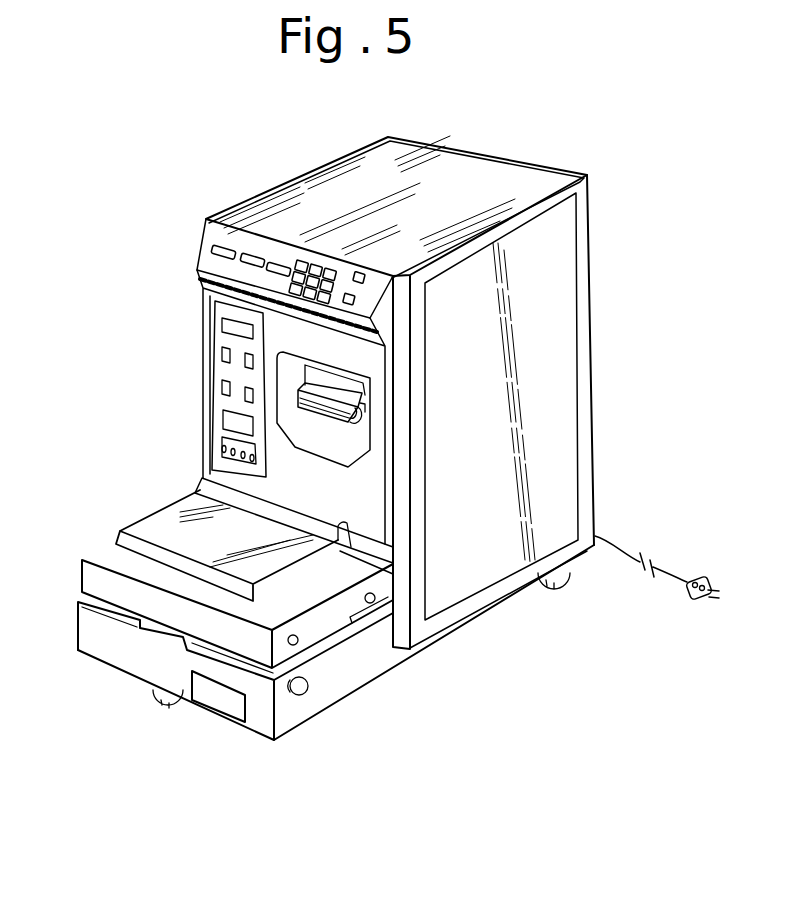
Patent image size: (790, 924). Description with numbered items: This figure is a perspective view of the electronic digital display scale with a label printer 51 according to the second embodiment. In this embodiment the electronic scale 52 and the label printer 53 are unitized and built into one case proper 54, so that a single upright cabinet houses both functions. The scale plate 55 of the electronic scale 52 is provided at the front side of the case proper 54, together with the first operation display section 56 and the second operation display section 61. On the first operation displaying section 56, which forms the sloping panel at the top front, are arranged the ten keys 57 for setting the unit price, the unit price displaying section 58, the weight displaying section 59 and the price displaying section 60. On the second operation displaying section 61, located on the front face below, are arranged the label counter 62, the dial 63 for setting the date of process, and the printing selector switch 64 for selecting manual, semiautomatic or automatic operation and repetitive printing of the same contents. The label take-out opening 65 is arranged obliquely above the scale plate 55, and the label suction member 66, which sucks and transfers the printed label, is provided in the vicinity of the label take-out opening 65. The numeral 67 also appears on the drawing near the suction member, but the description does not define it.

The electronic digital display scale with a label printer 51 is at (516, 157).
The electronic scale 52 is at (343, 677).
The label printer 53 is at (562, 477).
The case proper 54 is at (551, 301).
The scale plate 55 is at (140, 532).
The No. 1 operation display section 56 is at (253, 215).
The ten keys 57 is at (316, 262).
The unit price displaying section 58 is at (220, 252).
The weight displaying section 59 is at (240, 256).
The price displaying section 60 is at (278, 265).
The No. 2 operation display section 61 is at (189, 393).
The label counter 62 is at (232, 324).
The dial 63 is at (233, 417).
The printing selector switch 64 is at (222, 452).
The label take-out opening 65 is at (377, 393).
The label suction member 66 is at (322, 397).
The ribbon guide 67 is at (370, 408).